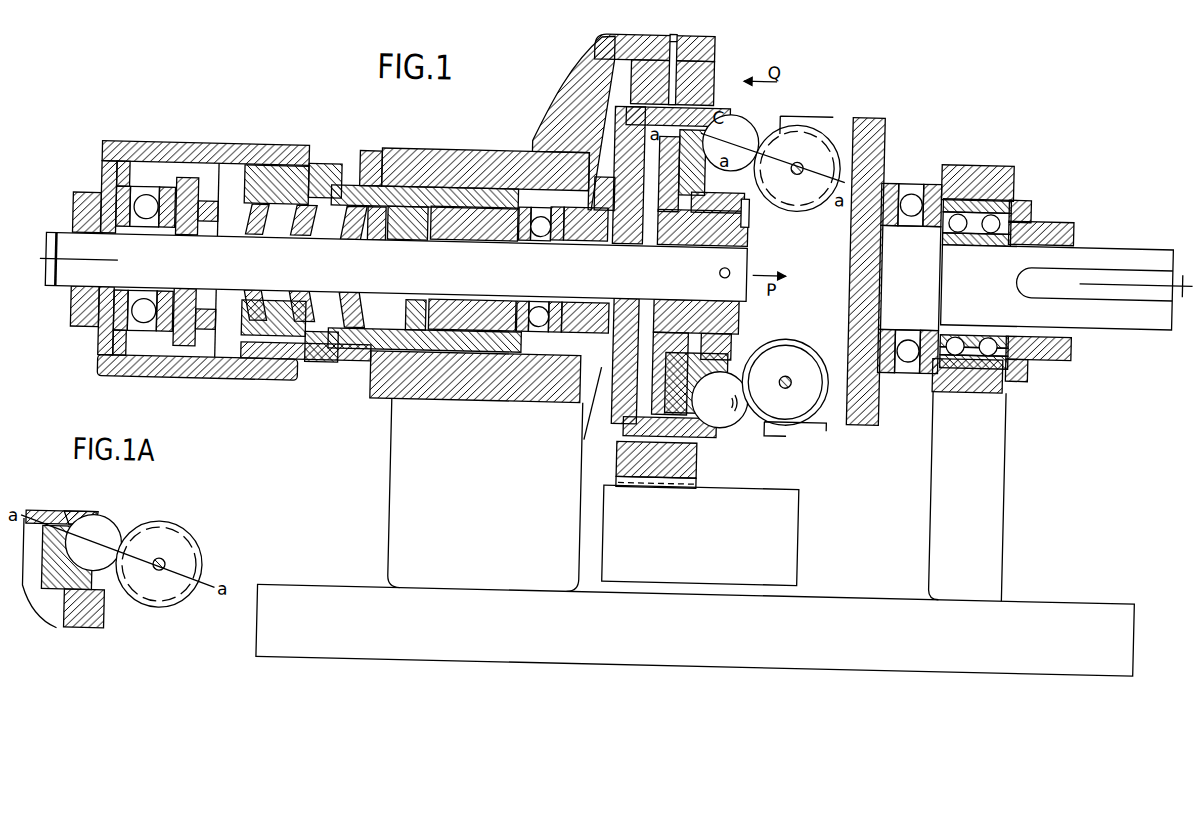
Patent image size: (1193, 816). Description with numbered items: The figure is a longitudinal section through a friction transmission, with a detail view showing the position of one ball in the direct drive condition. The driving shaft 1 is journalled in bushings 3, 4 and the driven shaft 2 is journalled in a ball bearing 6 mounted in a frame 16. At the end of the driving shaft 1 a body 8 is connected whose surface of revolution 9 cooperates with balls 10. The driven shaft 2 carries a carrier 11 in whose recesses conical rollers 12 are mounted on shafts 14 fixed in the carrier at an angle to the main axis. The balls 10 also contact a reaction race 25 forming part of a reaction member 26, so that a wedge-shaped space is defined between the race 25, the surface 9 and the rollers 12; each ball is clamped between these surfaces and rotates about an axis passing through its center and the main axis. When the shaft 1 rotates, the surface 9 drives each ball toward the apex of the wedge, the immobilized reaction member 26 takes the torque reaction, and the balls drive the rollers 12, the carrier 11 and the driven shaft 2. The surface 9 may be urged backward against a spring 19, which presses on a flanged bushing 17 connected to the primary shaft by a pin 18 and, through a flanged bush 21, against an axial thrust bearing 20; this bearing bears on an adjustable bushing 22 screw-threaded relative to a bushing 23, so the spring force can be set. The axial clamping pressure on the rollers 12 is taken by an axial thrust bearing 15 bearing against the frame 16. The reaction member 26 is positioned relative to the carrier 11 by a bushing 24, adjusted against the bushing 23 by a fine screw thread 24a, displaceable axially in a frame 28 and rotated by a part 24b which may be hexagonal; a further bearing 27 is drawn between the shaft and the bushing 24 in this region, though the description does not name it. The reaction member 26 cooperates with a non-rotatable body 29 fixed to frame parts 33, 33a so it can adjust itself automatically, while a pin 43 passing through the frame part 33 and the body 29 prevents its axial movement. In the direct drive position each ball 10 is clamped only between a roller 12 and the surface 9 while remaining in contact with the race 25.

In FIG. 1, the driving shaft 1 is at (212, 282).
In FIG. 1, the driven shaft 2 is at (1112, 250).
In FIG. 1, the bushing 3 is at (458, 160).
In FIG. 1, the bushing 4 is at (617, 247).
In FIG. 1, the ball bearing 6 is at (1015, 190).
In FIG. 1, the body 8 is at (742, 209).
In FIG. 1, the surface of revolution 9 is at (699, 272).
In FIG. 1A, the surface of revolution 9 is at (73, 576).
In FIG. 1, the balls 10 is at (748, 125).
In FIG. 1A, the balls 10 is at (117, 531).
In FIG. 1, the carrier 11 is at (870, 432).
In FIG. 1, the conical rollers 12 is at (797, 146).
In FIG. 1A, the conical rollers 12 is at (179, 549).
In FIG. 1, the shafts 14 is at (797, 164).
In FIG. 1A, the shafts 14 is at (168, 576).
In FIG. 1, the axial thrust bearing 15 is at (890, 368).
In FIG. 1, the frame 16 is at (1000, 377).
In FIG. 1, the flanged bushing 17 is at (410, 214).
In FIG. 1, the pin 18 is at (378, 191).
In FIG. 1, the spring 19 is at (277, 331).
In FIG. 1, the axial thrust bearing 20 is at (150, 205).
In FIG. 1, the flanged bush 21 is at (185, 187).
In FIG. 1, the adjustable bushing 22 is at (108, 152).
In FIG. 1, the bushing 23 is at (275, 173).
In FIG. 1, the bushing 24 is at (502, 202).
In FIG. 1, the fine screw thread 24a is at (318, 170).
In FIG. 1, the part 24b is at (589, 382).
In FIG. 1, the reaction race 25 is at (710, 108).
In FIG. 1A, the reaction race 25 is at (90, 524).
In FIG. 1, the reaction member 26 is at (620, 122).
In FIG. 1A, the reaction member 26 is at (62, 528).
In FIG. 1, the ball bearing 27 is at (523, 300).
In FIG. 1, the frame 28 is at (392, 408).
In FIG. 1, the non-rotatable body 29 is at (600, 62).
In FIG. 1, the frame part 33 is at (655, 45).
In FIG. 1, the frame part 33a is at (770, 522).
In FIG. 1, the pin 43 is at (690, 45).